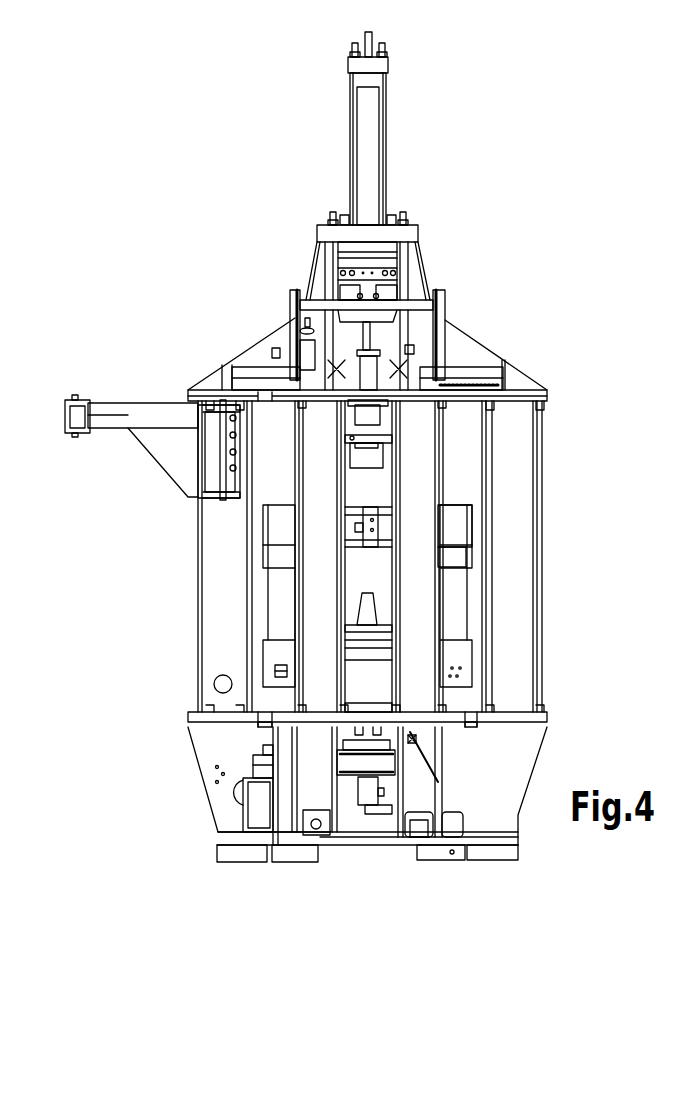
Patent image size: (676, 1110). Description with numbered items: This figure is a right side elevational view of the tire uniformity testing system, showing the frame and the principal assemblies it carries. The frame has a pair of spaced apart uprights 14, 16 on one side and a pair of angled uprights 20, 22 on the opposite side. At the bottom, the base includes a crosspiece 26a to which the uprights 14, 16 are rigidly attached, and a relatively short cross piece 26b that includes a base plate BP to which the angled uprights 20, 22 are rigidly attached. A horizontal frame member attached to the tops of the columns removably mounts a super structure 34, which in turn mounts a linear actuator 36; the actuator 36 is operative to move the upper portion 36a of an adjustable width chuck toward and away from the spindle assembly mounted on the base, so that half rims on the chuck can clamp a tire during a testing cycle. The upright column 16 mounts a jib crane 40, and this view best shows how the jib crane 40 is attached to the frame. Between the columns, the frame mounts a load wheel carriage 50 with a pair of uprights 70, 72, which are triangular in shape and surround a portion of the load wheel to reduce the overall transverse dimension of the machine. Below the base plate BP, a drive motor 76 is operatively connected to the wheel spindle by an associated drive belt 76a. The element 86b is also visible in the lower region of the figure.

The upright 14 is at (520, 540).
The upright column 16 is at (215, 530).
The angled upright 20 is at (473, 484).
The angled upright 22 is at (332, 498).
The crosspiece 26a is at (225, 738).
The cross piece 26b is at (313, 777).
The super structure 34 is at (307, 271).
The linear actuator 36 is at (365, 166).
The upper portion of adjustable width chuck 36a is at (375, 462).
The jib crane 40 is at (122, 402).
The load wheel carriage 50 is at (458, 503).
The upright 70 is at (452, 587).
The upright 72 is at (282, 572).
The drive motor 76 is at (265, 803).
The drive belt 76a is at (388, 767).
The tool 86b is at (378, 602).
The base plate BP is at (462, 716).